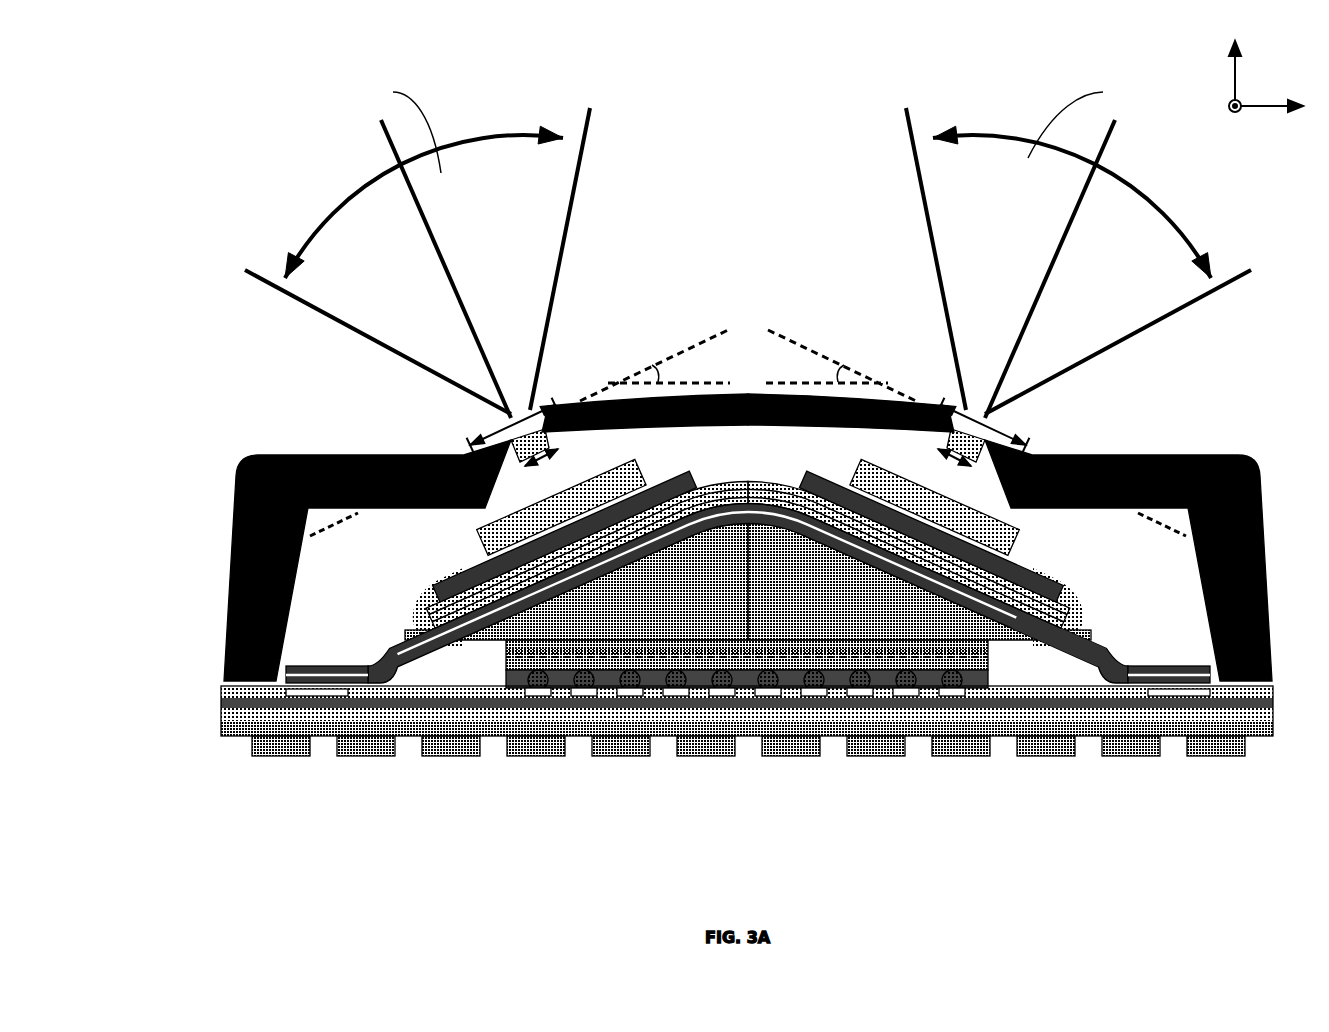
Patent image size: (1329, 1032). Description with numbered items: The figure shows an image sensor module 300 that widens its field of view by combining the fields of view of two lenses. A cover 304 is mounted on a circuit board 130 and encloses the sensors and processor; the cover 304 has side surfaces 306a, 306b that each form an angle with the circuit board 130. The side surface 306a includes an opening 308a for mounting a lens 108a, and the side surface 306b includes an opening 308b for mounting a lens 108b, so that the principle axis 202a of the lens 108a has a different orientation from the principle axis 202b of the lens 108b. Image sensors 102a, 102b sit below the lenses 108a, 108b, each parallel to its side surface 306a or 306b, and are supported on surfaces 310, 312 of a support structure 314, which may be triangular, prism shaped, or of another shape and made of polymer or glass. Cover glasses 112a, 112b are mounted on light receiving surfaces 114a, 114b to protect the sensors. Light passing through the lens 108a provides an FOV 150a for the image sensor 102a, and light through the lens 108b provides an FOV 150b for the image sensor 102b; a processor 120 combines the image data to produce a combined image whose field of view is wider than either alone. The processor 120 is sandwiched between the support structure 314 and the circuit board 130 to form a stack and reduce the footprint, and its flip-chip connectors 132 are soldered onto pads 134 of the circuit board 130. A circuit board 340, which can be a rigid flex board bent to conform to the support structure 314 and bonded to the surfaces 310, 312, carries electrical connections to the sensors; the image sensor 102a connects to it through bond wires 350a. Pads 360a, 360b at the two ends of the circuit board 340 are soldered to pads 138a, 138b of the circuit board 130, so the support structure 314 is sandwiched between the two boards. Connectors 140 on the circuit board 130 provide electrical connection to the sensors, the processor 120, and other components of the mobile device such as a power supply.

The image sensor module 300 is at (180, 63).
The FOV 150a is at (583, 104).
The FOV 150b is at (892, 104).
The principle axis 202a is at (457, 292).
The principle axis 202b is at (1023, 292).
The cover 304 is at (320, 445).
The side surface 306a is at (478, 432).
The side surface 306b is at (1005, 430).
The opening 308a is at (535, 452).
The opening 308b is at (945, 452).
The lens 108a is at (540, 432).
The lens 108b is at (938, 432).
The cover glass 112a is at (622, 457).
The cover glass 112b is at (848, 457).
The image sensor 102a is at (587, 544).
The image sensor 102b is at (909, 544).
The light receiving surface 114a is at (505, 540).
The light receiving surface 114b is at (970, 540).
The bond wires 350a is at (418, 578).
The circuit board 340 is at (388, 637).
The pad 360a is at (308, 668).
The pad 360b is at (1168, 668).
The processor 120 is at (503, 648).
The surface 310 is at (576, 582).
The surface 312 is at (919, 582).
The support structure 314 is at (990, 635).
The circuit board 130 is at (216, 715).
The pad 138a is at (307, 690).
The pad 138b is at (1152, 690).
The connectors 140 is at (528, 745).
The pads 134 is at (590, 690).
The flip-chip connectors 132 is at (897, 690).